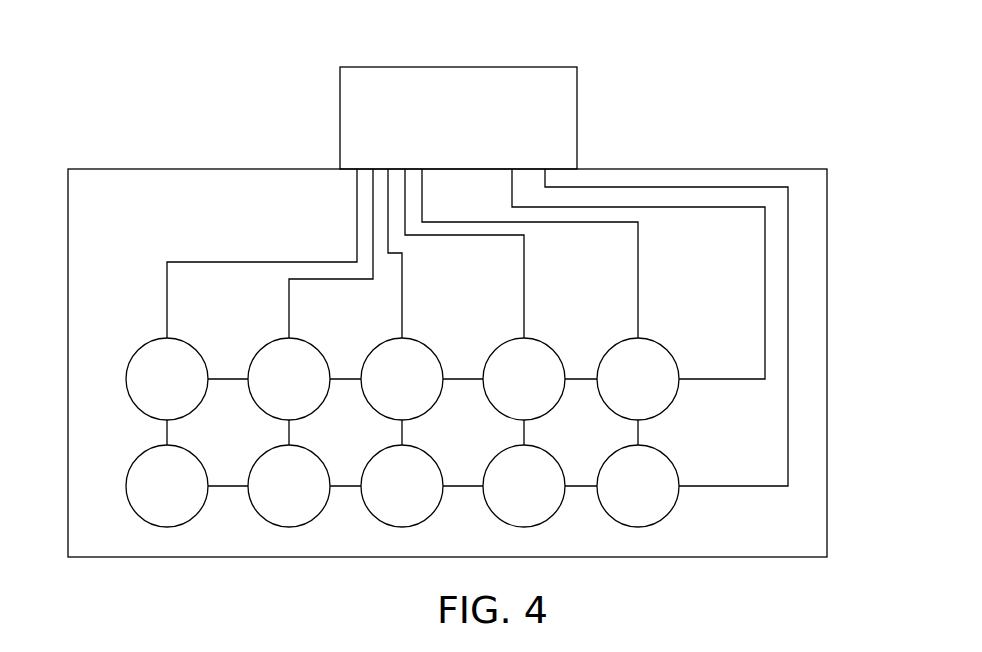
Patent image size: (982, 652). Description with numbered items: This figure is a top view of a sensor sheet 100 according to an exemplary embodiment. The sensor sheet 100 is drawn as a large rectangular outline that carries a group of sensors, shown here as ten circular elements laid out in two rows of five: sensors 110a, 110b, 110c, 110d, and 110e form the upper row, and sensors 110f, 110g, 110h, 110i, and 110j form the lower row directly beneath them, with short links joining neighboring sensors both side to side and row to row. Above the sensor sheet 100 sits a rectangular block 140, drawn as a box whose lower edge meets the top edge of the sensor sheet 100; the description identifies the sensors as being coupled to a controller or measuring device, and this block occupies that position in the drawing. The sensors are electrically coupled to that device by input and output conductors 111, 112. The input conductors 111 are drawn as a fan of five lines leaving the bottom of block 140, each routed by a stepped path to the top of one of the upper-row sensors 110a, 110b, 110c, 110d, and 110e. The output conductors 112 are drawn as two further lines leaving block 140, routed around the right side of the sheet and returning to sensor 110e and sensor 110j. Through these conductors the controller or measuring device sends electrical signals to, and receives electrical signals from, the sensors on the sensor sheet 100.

The sensor sheet 100 is at (770, 52).
The controller 140 is at (572, 88).
The input conductor 111 is at (422, 185).
The output conductor 112 is at (597, 207).
The sensor 110a is at (141, 391).
The sensor 110b is at (263, 391).
The sensor 110c is at (376, 391).
The sensor 110d is at (498, 391).
The sensor 110e is at (612, 391).
The sensor 110f is at (141, 498).
The sensor 110g is at (263, 498).
The sensor 110h is at (376, 498).
The sensor 110i is at (498, 498).
The sensor 110j is at (612, 498).